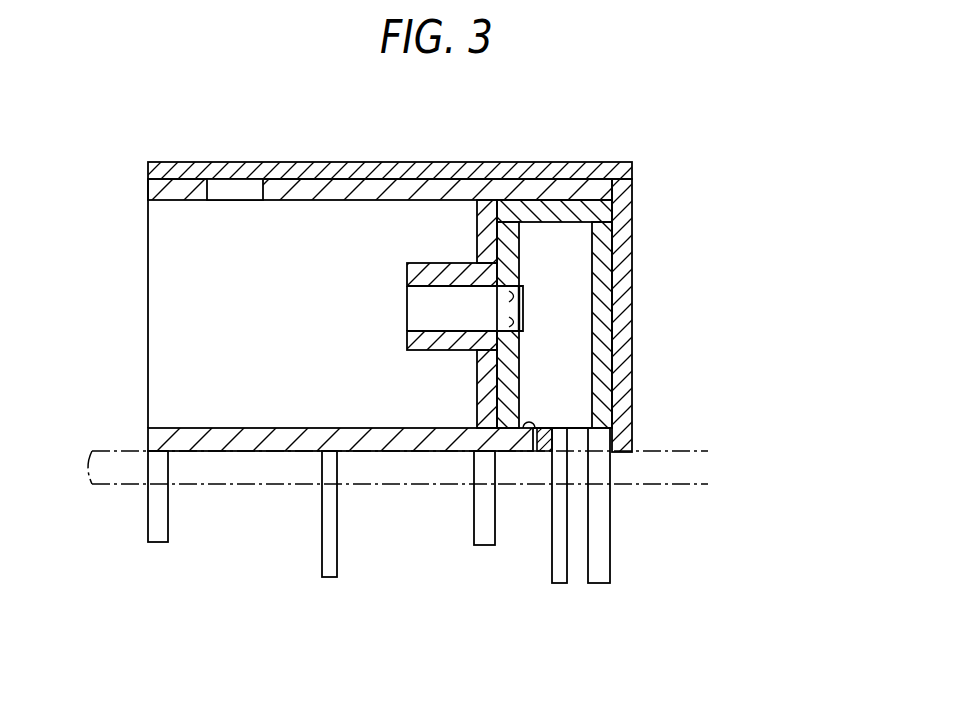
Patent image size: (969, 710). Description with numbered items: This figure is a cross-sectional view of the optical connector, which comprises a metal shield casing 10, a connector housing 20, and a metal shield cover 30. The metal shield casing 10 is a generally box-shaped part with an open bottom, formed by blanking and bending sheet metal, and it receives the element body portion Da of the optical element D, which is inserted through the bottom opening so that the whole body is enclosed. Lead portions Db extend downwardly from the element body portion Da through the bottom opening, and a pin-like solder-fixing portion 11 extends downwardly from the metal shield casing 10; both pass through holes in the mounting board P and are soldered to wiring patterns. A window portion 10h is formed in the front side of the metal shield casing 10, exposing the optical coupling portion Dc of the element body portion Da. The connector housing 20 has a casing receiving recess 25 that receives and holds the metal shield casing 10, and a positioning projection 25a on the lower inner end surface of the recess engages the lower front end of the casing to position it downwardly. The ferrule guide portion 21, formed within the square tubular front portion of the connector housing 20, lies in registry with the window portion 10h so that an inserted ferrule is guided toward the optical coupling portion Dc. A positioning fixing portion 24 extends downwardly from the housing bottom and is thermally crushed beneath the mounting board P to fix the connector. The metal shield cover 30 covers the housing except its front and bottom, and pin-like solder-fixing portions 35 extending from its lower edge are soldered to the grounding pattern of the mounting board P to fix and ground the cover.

The metal shield casing 10 is at (580, 235).
The window portion 10h is at (523, 315).
The solder-fixing portion 11 is at (612, 546).
The connector housing 20 is at (322, 188).
The ferrule guide portion 21 is at (453, 262).
The positioning fixing portion 24 is at (338, 548).
The casing receiving recess 25 is at (560, 232).
The positioning projection 25a is at (528, 436).
The metal shield cover 30 is at (450, 163).
The solder-fixing portion 35 is at (169, 517).
The element body portion Da is at (583, 378).
The lead portion Db is at (565, 500).
The optical coupling portion Dc is at (523, 291).
The optical element D is at (737, 368).
The mounting board P is at (125, 484).